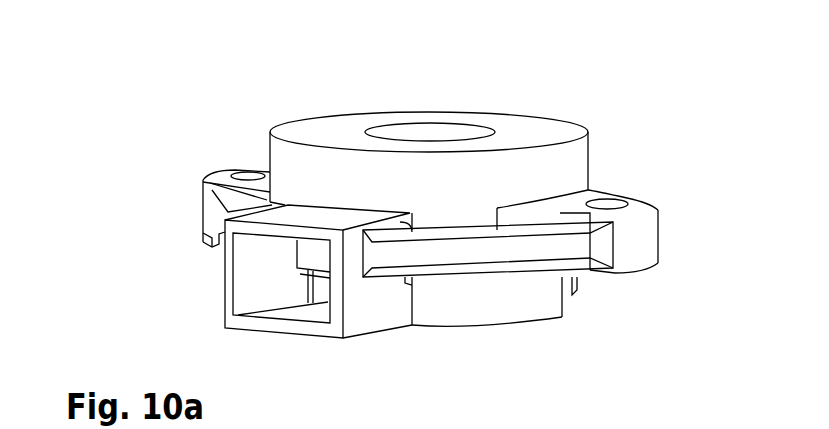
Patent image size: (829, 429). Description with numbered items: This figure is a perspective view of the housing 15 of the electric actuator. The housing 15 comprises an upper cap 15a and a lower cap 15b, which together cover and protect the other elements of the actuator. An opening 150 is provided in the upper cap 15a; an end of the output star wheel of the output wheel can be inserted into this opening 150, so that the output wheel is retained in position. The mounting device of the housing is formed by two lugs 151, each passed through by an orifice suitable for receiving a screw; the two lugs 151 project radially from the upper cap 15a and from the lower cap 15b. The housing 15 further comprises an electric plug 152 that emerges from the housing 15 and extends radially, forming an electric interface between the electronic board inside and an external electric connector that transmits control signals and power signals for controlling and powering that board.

The housing 15 is at (266, 101).
The opening 150 is at (438, 133).
The upper cap 15a is at (530, 182).
The lower cap 15b is at (487, 288).
The lugs 151 is at (227, 171).
The electric plug 152 is at (267, 283).